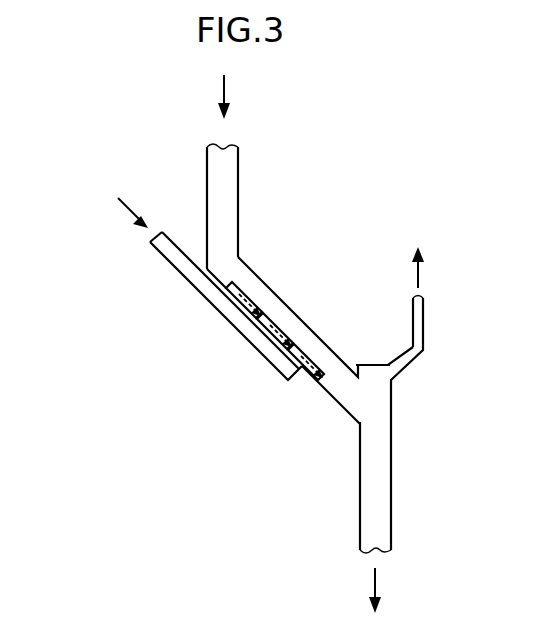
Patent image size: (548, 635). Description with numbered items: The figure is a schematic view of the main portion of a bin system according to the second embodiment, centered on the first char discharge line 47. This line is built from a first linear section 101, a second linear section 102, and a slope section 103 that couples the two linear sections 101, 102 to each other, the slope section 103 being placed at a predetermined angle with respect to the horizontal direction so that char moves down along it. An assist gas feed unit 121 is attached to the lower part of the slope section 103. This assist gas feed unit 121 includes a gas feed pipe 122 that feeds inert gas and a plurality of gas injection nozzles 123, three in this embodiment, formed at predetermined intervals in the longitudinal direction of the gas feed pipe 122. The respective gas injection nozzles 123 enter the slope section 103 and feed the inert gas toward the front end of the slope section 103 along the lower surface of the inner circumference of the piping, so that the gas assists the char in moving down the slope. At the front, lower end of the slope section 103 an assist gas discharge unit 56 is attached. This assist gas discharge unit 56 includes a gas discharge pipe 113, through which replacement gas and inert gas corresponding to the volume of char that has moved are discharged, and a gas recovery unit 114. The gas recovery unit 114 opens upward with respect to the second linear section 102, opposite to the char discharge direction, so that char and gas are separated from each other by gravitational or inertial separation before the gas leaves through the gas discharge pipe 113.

The first linear section 101 is at (233, 158).
The second linear section 102 is at (387, 520).
The slope section 103 is at (340, 387).
The gas discharge pipe 113 is at (424, 318).
The gas recovery unit 114 is at (378, 366).
The assist gas feed unit 121 is at (197, 311).
The gas feed pipe 122 is at (170, 262).
The gas injection nozzles 123 is at (234, 292).
The first char discharge line 47 is at (244, 220).
The assist gas discharge unit 56 is at (418, 371).